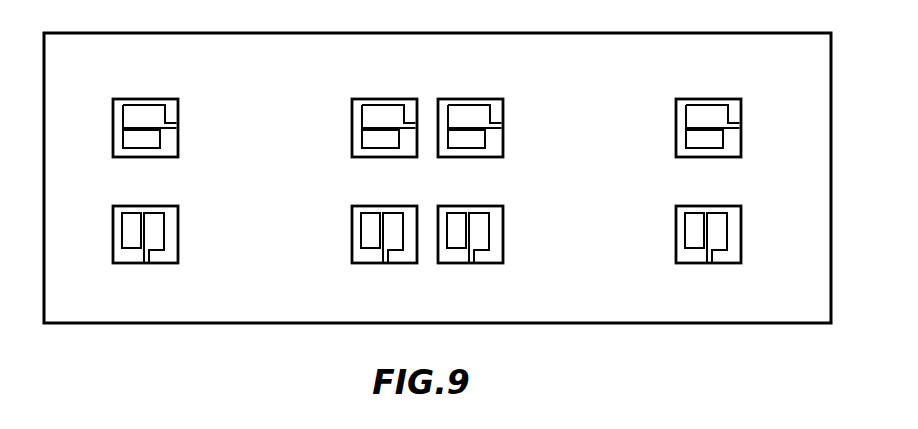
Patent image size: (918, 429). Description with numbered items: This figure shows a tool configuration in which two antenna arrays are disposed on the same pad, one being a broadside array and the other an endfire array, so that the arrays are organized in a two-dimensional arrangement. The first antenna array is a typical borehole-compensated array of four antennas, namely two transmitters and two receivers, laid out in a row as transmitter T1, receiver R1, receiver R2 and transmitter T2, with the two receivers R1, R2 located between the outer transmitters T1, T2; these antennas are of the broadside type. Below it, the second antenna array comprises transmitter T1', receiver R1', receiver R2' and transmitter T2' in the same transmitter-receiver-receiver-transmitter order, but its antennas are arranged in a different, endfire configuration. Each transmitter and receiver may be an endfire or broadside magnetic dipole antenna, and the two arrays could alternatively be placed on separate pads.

The transmitter antenna T1 is at (145, 113).
The receiver antenna R1 is at (384, 113).
The receiver antenna R2 is at (470, 113).
The transmitter antenna T2 is at (708, 113).
The transmitter antenna T1' is at (145, 250).
The receiver antenna R1' is at (384, 250).
The receiver antenna R2' is at (470, 250).
The transmitter antenna T2' is at (708, 250).